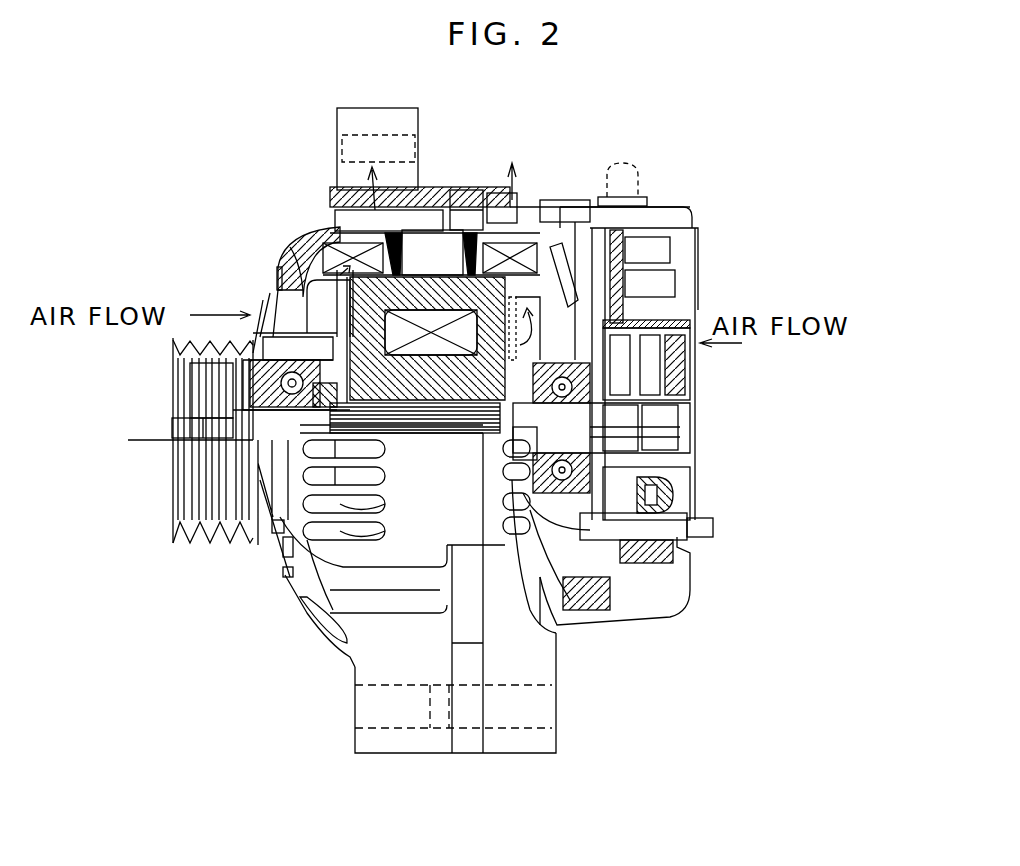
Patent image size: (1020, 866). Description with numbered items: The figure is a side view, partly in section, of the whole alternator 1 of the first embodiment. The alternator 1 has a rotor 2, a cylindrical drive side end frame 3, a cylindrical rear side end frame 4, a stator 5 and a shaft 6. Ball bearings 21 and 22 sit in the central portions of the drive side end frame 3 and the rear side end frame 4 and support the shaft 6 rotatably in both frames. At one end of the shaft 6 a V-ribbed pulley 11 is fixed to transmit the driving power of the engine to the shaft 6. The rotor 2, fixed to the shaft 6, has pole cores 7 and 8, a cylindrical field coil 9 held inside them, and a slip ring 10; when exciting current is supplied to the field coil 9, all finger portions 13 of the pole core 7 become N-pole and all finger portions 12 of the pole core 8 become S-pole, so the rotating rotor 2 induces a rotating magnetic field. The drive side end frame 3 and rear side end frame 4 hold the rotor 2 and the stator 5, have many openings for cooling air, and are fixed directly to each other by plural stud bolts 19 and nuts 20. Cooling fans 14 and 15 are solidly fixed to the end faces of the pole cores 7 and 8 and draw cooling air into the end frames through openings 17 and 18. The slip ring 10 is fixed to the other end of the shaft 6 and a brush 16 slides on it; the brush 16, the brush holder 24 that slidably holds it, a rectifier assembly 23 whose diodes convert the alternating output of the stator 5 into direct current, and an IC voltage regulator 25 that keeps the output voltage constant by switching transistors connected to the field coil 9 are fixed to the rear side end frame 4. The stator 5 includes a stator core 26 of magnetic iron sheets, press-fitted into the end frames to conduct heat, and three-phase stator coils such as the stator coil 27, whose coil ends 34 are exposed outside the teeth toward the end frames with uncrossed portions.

The alternator 1 is at (239, 213).
The rotor 2 is at (253, 333).
The drive side end frame 3 is at (380, 663).
The rear side end frame 4 is at (535, 673).
The stator 5 is at (303, 274).
The shaft 6 is at (253, 423).
The pole core 7 is at (233, 393).
The pole core 8 is at (673, 417).
The field coil 9 is at (428, 320).
The slip ring 10 is at (620, 422).
The V-ribbed pulley 11 is at (173, 494).
The finger portions 12 is at (440, 300).
The finger portions 13 is at (433, 312).
The cooling fan 14 is at (280, 285).
The cooling fan 15 is at (567, 285).
The brush 16 is at (692, 378).
The opening 17 is at (283, 557).
The opening 18 is at (557, 623).
The stud bolt 19 is at (545, 290).
The nut 20 is at (550, 205).
The ball bearing 21 is at (240, 375).
The ball bearing 22 is at (580, 630).
The rectifier assembly 23 is at (682, 488).
The brush holder 24 is at (687, 310).
The IC voltage regulator 25 is at (627, 230).
The stator core 26 is at (385, 200).
The stator coil 27 is at (307, 225).
The coil ends 34 is at (315, 250).